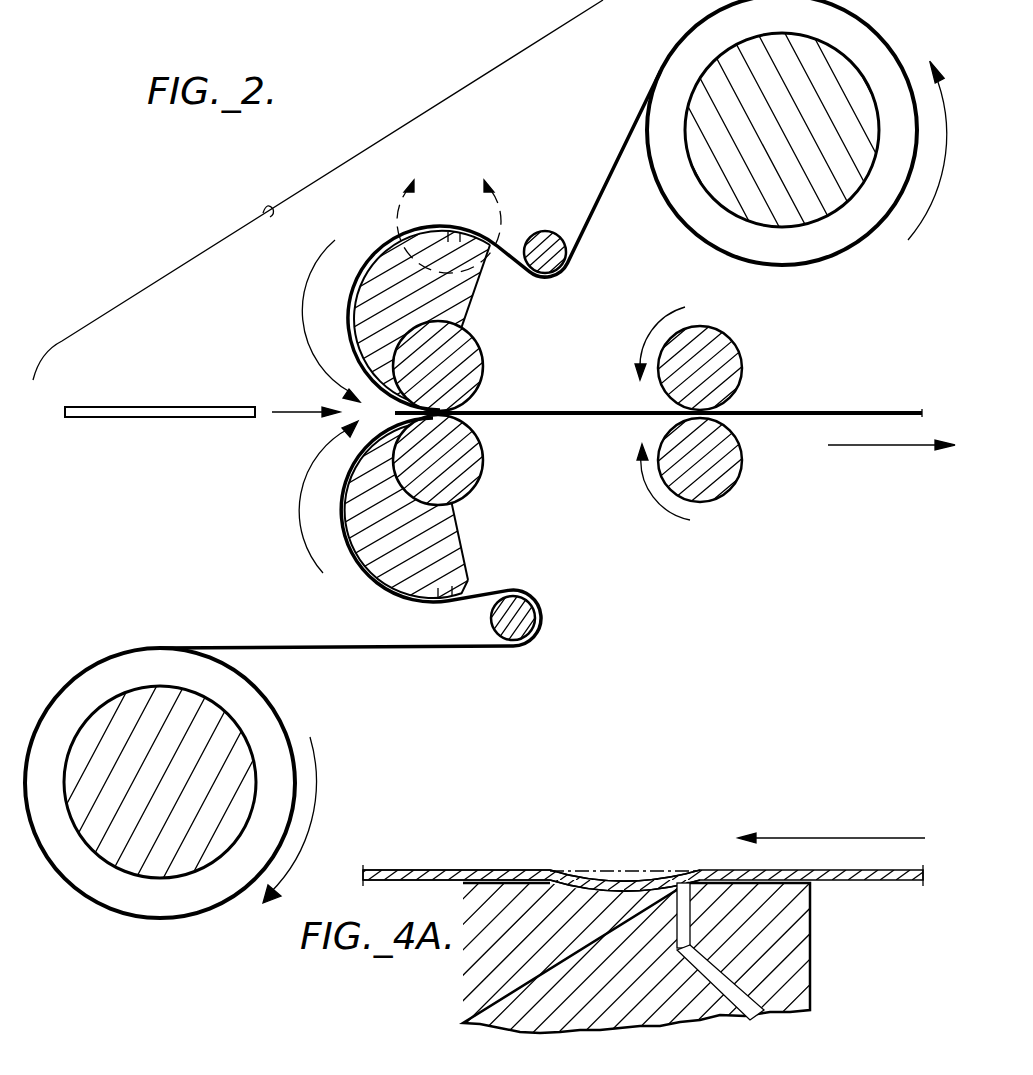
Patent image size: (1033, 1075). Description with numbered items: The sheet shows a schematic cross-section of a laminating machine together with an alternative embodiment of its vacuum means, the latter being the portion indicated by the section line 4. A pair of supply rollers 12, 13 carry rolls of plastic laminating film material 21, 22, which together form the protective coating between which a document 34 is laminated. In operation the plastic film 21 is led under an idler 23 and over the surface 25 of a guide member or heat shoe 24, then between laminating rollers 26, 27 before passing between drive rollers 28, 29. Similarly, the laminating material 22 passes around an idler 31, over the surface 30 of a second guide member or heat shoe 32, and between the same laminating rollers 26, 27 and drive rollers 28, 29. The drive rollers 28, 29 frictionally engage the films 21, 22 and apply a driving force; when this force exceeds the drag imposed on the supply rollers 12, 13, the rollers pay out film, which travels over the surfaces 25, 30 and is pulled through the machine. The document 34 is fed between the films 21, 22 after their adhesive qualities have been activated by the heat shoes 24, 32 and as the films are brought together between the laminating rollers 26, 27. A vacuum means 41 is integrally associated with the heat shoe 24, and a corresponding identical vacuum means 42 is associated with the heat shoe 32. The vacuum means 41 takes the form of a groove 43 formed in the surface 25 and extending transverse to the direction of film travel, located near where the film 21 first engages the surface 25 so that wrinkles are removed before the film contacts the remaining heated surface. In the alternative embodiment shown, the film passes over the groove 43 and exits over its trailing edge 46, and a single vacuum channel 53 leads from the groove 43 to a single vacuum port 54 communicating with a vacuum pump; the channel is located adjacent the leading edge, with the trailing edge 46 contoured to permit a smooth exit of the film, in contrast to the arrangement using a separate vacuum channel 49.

In FIG. 2, the section line 4- 4 is at (449, 215).
In FIG. 2, the supply roller 12 is at (730, 183).
In FIG. 2, the supply roller 13 is at (235, 740).
In FIG. 2, the plastic laminating film material 21 is at (700, 27).
In FIG. 2, the laminating plastic film material 22 is at (812, 416).
In FIG. 2, the idler 23 is at (551, 233).
In FIG. 2, the guide member (heat shoe) 24 is at (470, 302).
In FIG. 2, the surface 25 is at (390, 250).
In FIG. 2, the laminating roller 26 is at (473, 358).
In FIG. 2, the laminating roller 27 is at (476, 455).
In FIG. 2, the drive roller 28 is at (720, 345).
In FIG. 2, the drive roller 29 is at (735, 475).
In FIG. 2, the surface 30 is at (357, 560).
In FIG. 2, the idler 31 is at (536, 630).
In FIG. 2, the guide member (heat shoe) 32 is at (453, 558).
In FIG. 2, the document 34 is at (172, 406).
In FIG. 2, the vacuum means 41 is at (450, 218).
In FIG. 2, the vacuum means 42 is at (430, 606).
In FIG. 4A, the groove 43 is at (612, 880).
In FIG. 4A, the trailing edge 46 is at (555, 872).
In FIG. 4A, the vacuum channel 49 is at (690, 870).
In FIG. 4A, the single vacuum channel 53 is at (692, 921).
In FIG. 4A, the single vacuum port 54 is at (742, 1018).